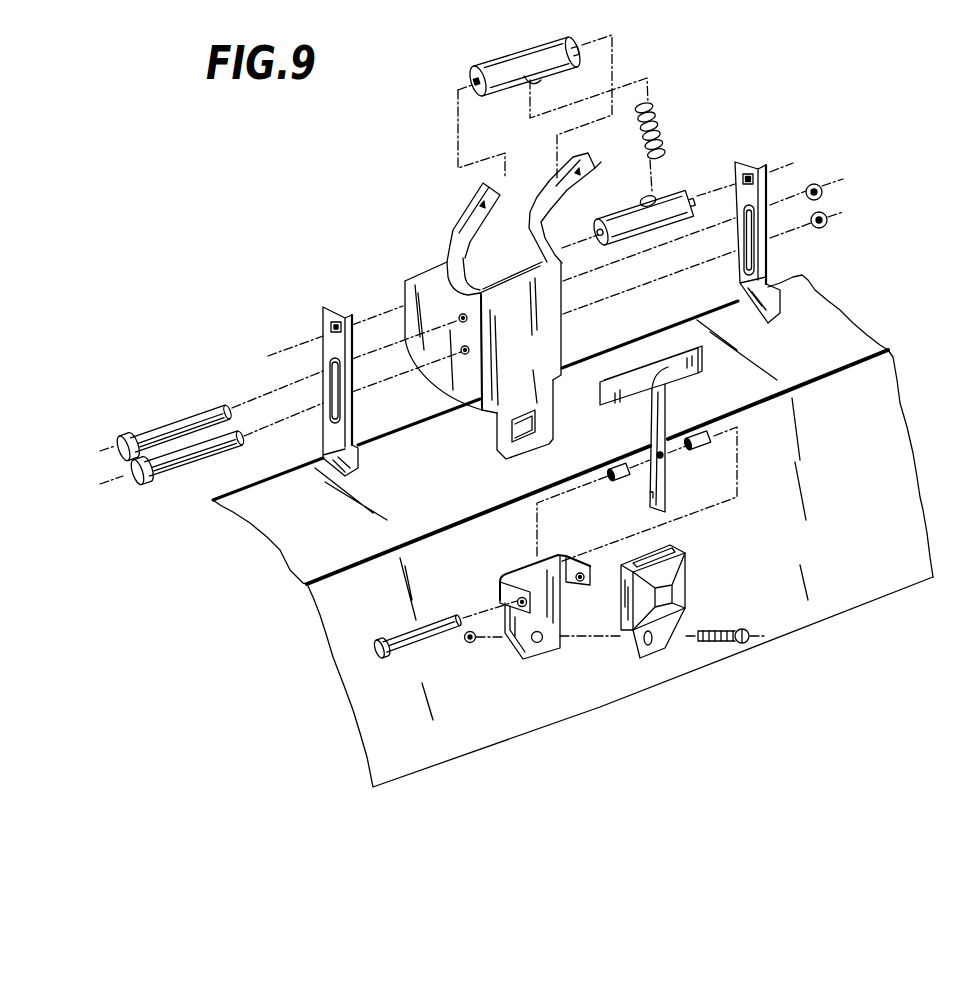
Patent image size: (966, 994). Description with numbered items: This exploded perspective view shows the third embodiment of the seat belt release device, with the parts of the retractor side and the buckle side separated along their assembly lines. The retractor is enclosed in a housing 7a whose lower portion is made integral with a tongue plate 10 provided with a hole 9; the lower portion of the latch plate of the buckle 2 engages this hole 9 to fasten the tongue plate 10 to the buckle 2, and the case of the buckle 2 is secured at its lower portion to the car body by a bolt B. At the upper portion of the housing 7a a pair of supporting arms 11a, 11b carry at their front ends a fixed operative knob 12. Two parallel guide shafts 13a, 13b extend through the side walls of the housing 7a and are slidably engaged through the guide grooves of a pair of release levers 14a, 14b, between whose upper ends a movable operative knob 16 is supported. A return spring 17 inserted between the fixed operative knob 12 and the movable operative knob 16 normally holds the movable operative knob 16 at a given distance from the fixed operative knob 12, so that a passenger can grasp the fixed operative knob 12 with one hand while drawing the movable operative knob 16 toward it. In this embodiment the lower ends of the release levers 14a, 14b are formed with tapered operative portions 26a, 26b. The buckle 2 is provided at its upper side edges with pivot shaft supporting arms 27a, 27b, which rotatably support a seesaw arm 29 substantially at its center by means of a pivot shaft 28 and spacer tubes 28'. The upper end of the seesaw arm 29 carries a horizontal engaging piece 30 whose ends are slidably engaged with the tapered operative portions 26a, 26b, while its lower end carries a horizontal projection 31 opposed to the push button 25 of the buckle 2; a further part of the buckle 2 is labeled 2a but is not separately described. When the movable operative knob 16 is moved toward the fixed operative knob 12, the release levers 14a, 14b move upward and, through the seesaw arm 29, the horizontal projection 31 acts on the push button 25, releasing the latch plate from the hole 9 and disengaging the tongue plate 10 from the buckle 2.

The buckle 2 is at (682, 569).
The mounting tab of socket block 2a is at (562, 612).
The housing 7a is at (440, 378).
The hole 9 is at (503, 457).
The tongue plate 10 is at (497, 421).
The supporting arm 11a is at (452, 228).
The supporting arm 11b is at (562, 176).
The fixed operative knob 12 is at (535, 60).
The guide shaft 13a is at (180, 466).
The guide shaft 13b is at (182, 420).
The release lever 14a is at (330, 415).
The release lever 14b is at (743, 263).
The movable operative knob 16 is at (676, 197).
The return spring 17 is at (660, 122).
The push button 25 is at (668, 593).
The tapered operative portion 26a is at (363, 447).
The tapered operative portion 26b is at (807, 283).
The pivot shaft supporting arm 27a is at (503, 577).
The pivot shaft supporting arm 27b is at (580, 563).
The pivot shaft 28 is at (423, 657).
The spacer tube 28' is at (693, 472).
The seesaw arm 29 is at (670, 400).
The horizontal engaging piece 30 is at (620, 388).
The horizontal projection 31 is at (652, 493).
The bolt B is at (740, 643).